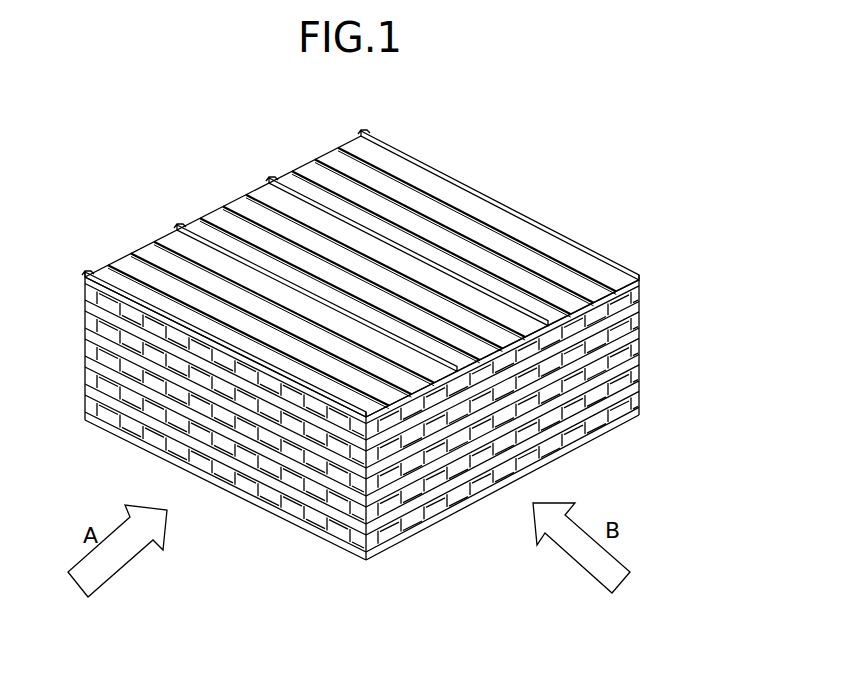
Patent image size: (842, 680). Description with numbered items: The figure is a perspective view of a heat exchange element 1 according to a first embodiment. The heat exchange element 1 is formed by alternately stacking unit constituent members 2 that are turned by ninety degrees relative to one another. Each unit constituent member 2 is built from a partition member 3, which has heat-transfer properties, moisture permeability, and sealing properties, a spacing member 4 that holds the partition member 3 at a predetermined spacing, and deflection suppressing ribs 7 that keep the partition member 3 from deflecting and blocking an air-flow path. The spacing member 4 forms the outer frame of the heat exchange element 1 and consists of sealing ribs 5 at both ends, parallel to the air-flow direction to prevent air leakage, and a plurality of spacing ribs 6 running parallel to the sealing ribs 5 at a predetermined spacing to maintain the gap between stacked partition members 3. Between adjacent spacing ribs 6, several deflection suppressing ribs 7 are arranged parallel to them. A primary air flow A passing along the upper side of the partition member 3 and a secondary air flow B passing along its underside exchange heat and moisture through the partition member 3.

The heat exchange element 1 is at (635, 129).
The unit constituent member 2 is at (423, 140).
The partition member 3 is at (313, 165).
The spacing member 4 is at (155, 152).
The sealing rib 5 is at (90, 268).
The spacing rib 6 is at (178, 228).
The deflection suppressing rib 7 is at (226, 207).